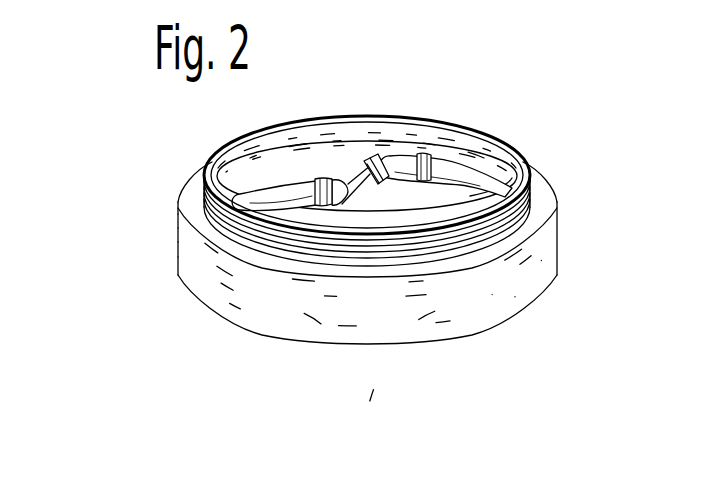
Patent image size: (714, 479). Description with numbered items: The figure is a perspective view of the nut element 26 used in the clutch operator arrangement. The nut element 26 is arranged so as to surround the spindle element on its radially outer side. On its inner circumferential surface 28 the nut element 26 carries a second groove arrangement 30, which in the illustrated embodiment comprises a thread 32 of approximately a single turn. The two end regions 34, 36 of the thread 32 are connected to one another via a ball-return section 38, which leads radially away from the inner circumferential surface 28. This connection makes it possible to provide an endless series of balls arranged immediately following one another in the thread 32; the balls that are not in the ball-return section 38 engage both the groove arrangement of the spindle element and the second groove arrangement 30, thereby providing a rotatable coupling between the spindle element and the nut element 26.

The nut element 26 is at (558, 246).
The inner circumferential surface 28 is at (273, 160).
The second groove arrangement 30 is at (495, 172).
The thread 32 is at (203, 192).
The end region of the thread 34 is at (317, 181).
The end region of the thread 36 is at (453, 160).
The ball-return section 38 is at (374, 158).